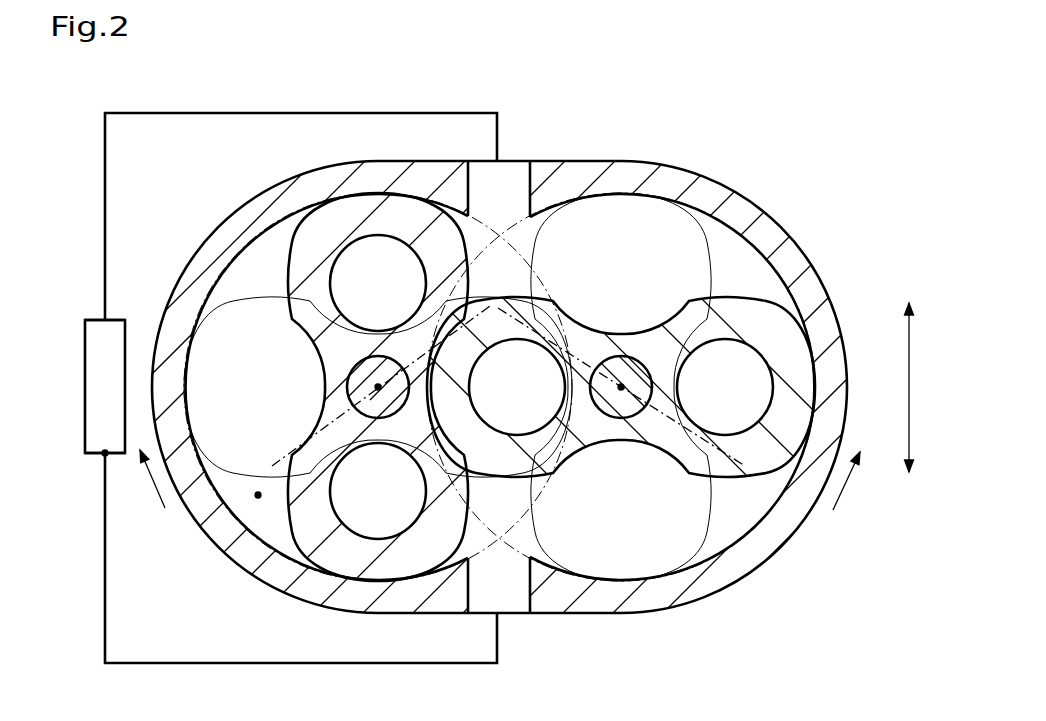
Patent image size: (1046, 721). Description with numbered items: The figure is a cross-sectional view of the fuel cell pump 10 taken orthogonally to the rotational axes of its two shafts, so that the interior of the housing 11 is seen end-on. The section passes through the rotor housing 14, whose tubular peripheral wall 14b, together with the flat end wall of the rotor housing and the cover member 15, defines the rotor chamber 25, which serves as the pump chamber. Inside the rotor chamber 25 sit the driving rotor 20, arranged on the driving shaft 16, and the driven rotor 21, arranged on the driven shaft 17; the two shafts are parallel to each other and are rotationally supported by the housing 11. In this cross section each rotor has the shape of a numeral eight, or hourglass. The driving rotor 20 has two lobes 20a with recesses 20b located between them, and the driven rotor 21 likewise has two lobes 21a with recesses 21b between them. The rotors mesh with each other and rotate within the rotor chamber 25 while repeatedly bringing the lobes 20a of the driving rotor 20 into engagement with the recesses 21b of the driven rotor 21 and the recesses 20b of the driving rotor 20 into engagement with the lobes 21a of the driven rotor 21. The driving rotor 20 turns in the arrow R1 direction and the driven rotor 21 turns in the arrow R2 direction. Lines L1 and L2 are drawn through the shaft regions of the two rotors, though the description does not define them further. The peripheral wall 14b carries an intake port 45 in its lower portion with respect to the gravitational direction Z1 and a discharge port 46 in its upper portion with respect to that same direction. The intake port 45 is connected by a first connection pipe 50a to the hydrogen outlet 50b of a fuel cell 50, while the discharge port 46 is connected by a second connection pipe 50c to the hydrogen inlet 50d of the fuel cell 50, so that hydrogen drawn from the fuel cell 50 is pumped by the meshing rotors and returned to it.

The fuel cell pump 10 is at (249, 193).
The housing 11 is at (742, 195).
The rotor housing 14 is at (200, 247).
The peripheral wall of the rotor housing 14b is at (190, 279).
The cover member 15 is at (740, 528).
The driving shaft 16 is at (383, 418).
The driven shaft 17 is at (598, 418).
The driving rotor 20 is at (300, 258).
The lobes of the driving rotor 20a is at (378, 193).
The recesses of the driving rotor 20b is at (325, 387).
The driven rotor 21 is at (772, 260).
The lobes of the driven rotor 21a is at (414, 365).
The recesses of the driven rotor 21b is at (623, 337).
The rotor chamber 25 is at (258, 495).
The intake port 45 is at (520, 600).
The discharge port 46 is at (520, 186).
The fuel cell 50 is at (85, 398).
The first connection pipe 50a is at (305, 663).
The hydrogen outlet 50b is at (105, 453).
The second connection pipe 50c is at (300, 113).
The hydrogen inlet 50d is at (105, 318).
The first line through first shaft axis L1 is at (323, 413).
The second line through second shaft axis L2 is at (653, 393).
The arrow R1 direction R1 is at (155, 485).
The arrow R2 direction R2 is at (852, 487).
The gravitational direction Z1 is at (912, 387).